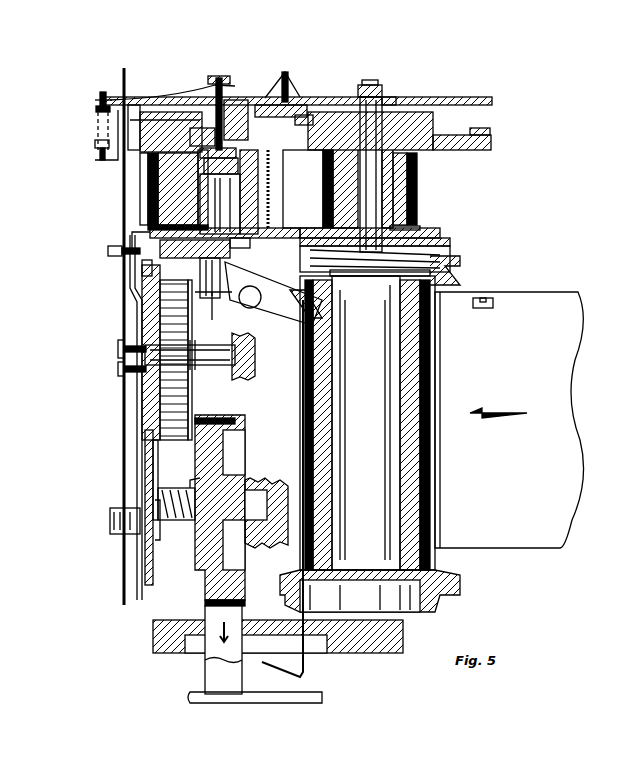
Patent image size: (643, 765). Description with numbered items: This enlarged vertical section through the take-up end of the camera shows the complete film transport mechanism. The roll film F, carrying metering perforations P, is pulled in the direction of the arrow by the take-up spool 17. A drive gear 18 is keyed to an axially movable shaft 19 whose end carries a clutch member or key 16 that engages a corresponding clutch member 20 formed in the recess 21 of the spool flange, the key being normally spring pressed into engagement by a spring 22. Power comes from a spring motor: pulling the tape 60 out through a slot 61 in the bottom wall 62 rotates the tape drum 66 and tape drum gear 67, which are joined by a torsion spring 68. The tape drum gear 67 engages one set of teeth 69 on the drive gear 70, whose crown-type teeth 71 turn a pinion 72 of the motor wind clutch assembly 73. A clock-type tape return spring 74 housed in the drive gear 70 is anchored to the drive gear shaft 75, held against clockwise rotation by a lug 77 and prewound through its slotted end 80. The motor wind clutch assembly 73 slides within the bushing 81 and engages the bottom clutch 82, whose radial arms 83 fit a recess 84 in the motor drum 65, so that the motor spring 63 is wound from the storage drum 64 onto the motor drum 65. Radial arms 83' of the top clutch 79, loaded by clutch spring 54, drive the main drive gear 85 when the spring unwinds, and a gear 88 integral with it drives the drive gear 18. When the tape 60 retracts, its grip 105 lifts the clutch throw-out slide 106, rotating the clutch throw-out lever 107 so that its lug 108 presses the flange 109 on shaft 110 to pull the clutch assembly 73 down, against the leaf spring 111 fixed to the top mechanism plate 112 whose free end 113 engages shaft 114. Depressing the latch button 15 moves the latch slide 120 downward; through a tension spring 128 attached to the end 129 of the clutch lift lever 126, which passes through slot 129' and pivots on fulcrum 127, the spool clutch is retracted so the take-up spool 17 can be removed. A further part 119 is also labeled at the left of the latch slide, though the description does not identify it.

The end of the clutch lift lever 129 is at (91, 79).
The slot 129' is at (145, 321).
The leaf spring 111 is at (178, 95).
The top mechanism plate 112 is at (452, 100).
The free end of leaf spring 113 is at (230, 78).
The shaft of the motor clutch assembly 114 is at (240, 100).
The fulcrum 127 is at (288, 75).
The main drive gear 85 is at (302, 112).
The clutch lift lever 126 is at (352, 95).
The axially movable shaft 19 is at (386, 97).
The drive gear 18 is at (485, 138).
The tension spring 128 is at (96, 110).
The gear 88 is at (130, 120).
The top clutch 79 is at (195, 136).
The bracket 119 is at (95, 150).
The clutch spring 54 is at (150, 160).
The radial arms 83 is at (144, 189).
The bushing 81 is at (200, 195).
The motor drum 65 is at (150, 215).
The bottom clutch 82 is at (220, 196).
The motor wind clutch assembly 73 is at (232, 192).
The recess 84 is at (295, 189).
The radial arms 83' is at (295, 189).
The motor spring 63 is at (412, 165).
The storage drum 64 is at (405, 190).
The spring 22 is at (412, 230).
The latch slide 120 is at (150, 232).
The recess 21 is at (440, 258).
The clutch member or key 16 is at (460, 265).
The take-up spool 17 is at (418, 515).
The clutch member 20 is at (325, 285).
The bottom wall 62 is at (362, 652).
The slot 61 is at (245, 620).
The tape 60 is at (212, 673).
The grip 105 is at (320, 700).
The clutch throw-out slide 106 is at (304, 668).
The drive gear 70 is at (133, 300).
The crown-type teeth 71 is at (108, 253).
The teeth 69 is at (142, 274).
The pinion 72 is at (205, 268).
The tape return spring 74 is at (165, 320).
The drive gear shaft 75 is at (208, 370).
The slotted end 80 is at (118, 352).
The lug 77 is at (118, 373).
The lug 108 is at (232, 272).
The flange 109 is at (218, 300).
The shaft 110 is at (211, 306).
The clutch throw-out lever 107 is at (290, 308).
The tape drum 66 is at (232, 450).
The torsion spring 68 is at (178, 520).
The latch button 15 is at (112, 535).
The tape drum gear 67 is at (152, 570).
The roll film F is at (544, 565).
The metering perforations P is at (488, 300).